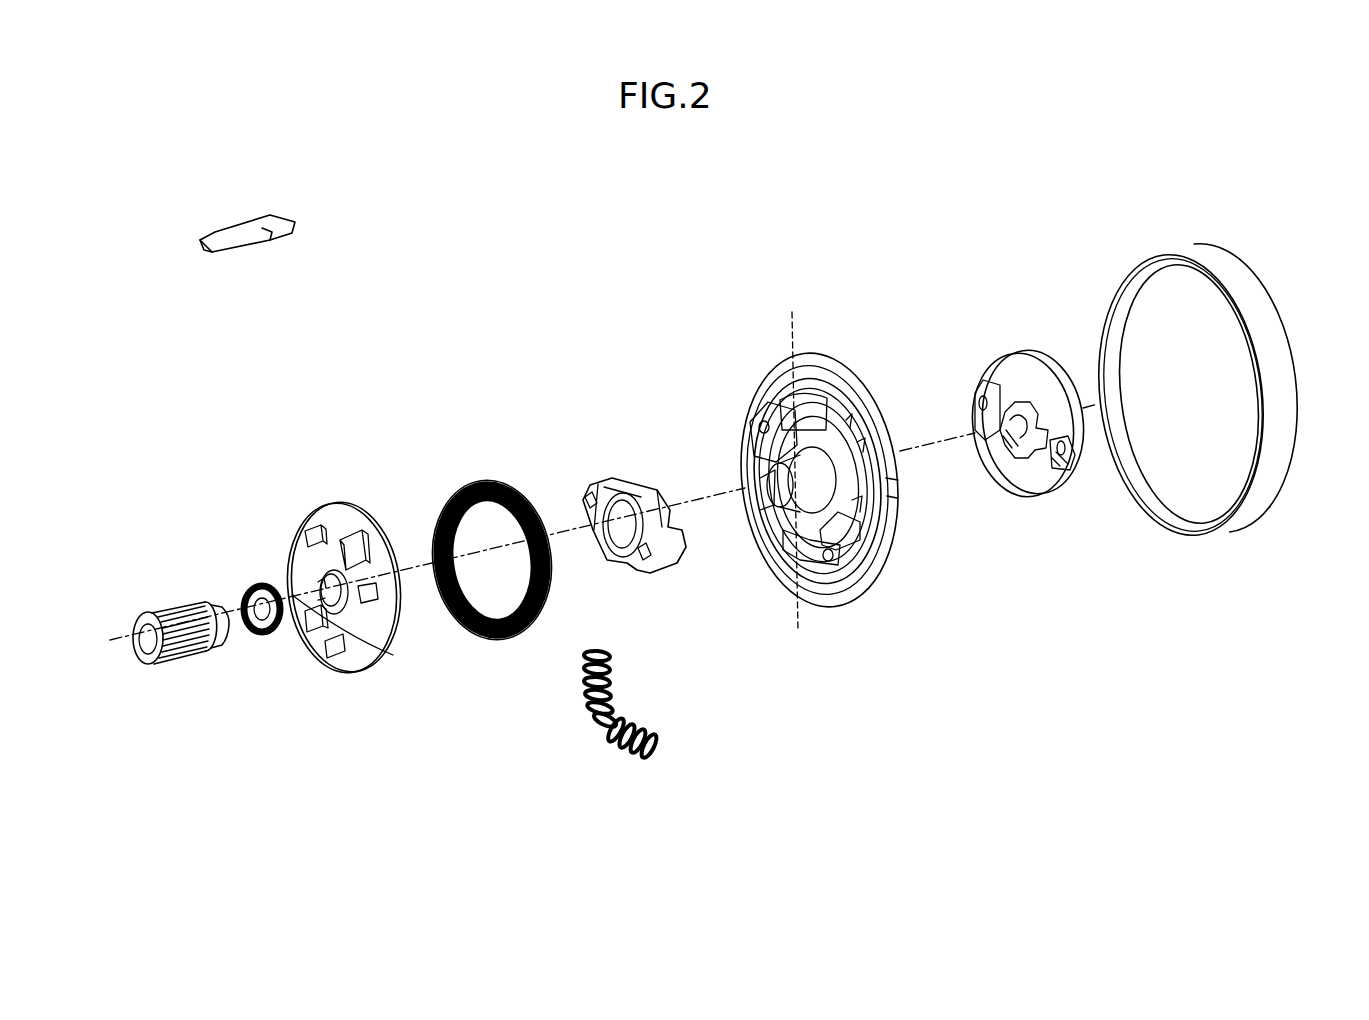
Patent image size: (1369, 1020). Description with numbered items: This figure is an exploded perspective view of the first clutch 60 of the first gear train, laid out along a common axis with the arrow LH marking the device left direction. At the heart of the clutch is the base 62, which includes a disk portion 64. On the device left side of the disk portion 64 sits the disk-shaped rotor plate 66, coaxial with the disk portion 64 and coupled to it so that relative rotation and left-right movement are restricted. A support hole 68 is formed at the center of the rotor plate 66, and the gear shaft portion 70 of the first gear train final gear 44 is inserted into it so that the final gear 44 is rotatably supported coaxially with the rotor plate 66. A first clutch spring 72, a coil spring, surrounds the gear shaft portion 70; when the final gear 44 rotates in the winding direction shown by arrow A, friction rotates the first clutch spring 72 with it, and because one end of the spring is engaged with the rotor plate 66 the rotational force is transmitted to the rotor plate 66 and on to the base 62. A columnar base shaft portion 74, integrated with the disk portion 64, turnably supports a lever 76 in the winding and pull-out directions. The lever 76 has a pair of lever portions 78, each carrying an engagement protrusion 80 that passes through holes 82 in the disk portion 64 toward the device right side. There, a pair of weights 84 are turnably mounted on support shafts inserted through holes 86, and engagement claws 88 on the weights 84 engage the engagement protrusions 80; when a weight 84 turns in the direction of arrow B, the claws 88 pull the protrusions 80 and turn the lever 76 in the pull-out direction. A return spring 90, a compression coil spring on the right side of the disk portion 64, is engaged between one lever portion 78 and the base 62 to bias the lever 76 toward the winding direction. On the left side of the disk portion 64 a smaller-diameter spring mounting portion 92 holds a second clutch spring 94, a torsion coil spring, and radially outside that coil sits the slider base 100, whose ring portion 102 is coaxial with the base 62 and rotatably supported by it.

The first gear train final gear 44 is at (152, 572).
The first clutch 60 is at (702, 316).
The base 62 is at (792, 420).
The disk portion 64 is at (846, 398).
The rotor plate 66 is at (338, 566).
The support hole 68 is at (388, 660).
The gear shaft portion 70 is at (212, 666).
The first clutch spring 72 is at (270, 636).
The base shaft portion 74 is at (782, 560).
The lever 76 is at (657, 525).
The lever portions 78 is at (603, 476).
The engagement protrusion 80 is at (630, 484).
The holes 82 is at (820, 336).
The weights 84 is at (1027, 432).
The hole 86 is at (968, 396).
The engagement claws 88 is at (1036, 406).
The return spring 90 is at (602, 740).
The spring mounting portion 92 is at (866, 416).
The second clutch spring 94 is at (442, 510).
The slider base 100 is at (1198, 428).
The ring portion 102 is at (1253, 420).
The device left side direction LH is at (282, 255).
The winding direction A is at (1102, 250).
The weight turning direction B is at (998, 335).